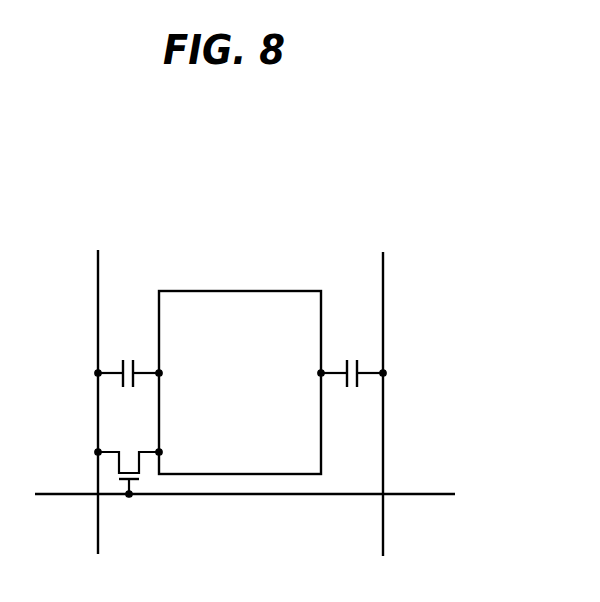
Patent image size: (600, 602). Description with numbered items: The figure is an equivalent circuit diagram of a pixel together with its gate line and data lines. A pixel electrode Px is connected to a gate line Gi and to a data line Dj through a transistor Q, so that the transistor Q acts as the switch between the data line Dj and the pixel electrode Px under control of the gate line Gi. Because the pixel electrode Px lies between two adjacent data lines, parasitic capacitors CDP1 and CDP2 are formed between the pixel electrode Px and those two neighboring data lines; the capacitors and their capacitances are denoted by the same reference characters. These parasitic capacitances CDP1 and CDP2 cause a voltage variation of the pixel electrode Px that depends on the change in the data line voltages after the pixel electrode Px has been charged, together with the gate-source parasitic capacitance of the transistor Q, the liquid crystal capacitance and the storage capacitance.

The data line Dj is at (96, 385).
The gate line Gi is at (233, 493).
The pixel electrode Px is at (240, 382).
The parasitic capacitor CDP1 is at (128, 361).
The parasitic capacitor CDP2 is at (352, 361).
The transistor Q is at (128, 462).